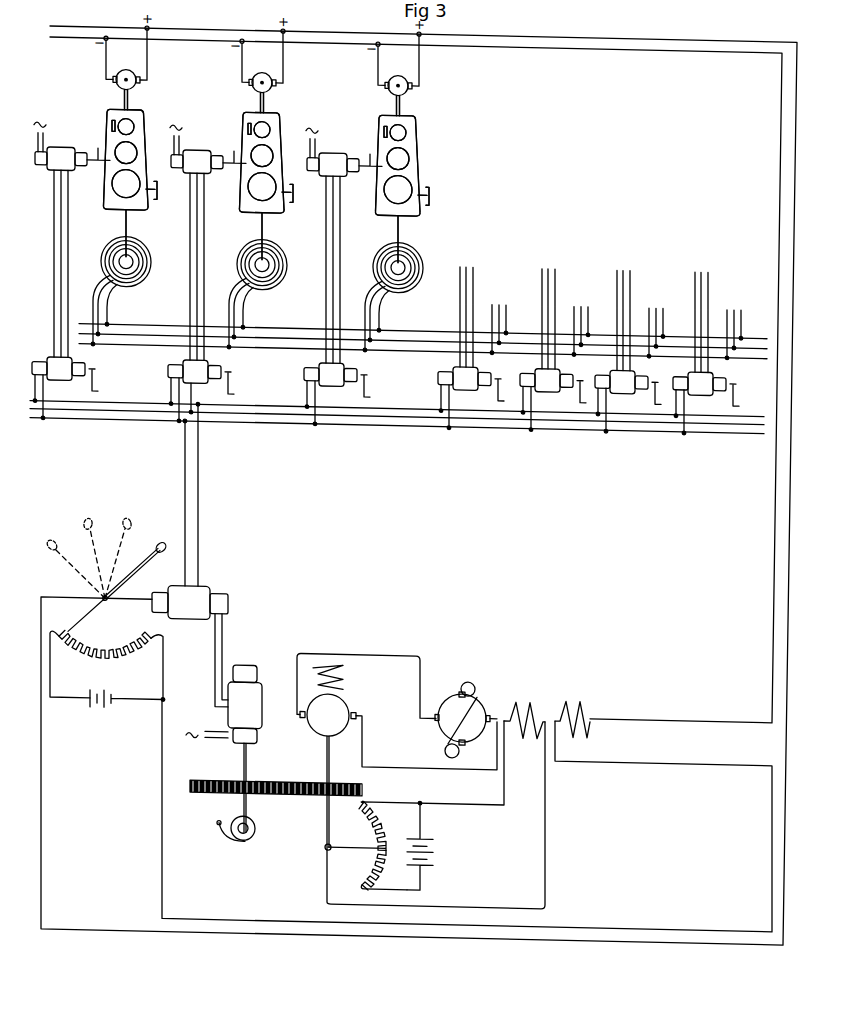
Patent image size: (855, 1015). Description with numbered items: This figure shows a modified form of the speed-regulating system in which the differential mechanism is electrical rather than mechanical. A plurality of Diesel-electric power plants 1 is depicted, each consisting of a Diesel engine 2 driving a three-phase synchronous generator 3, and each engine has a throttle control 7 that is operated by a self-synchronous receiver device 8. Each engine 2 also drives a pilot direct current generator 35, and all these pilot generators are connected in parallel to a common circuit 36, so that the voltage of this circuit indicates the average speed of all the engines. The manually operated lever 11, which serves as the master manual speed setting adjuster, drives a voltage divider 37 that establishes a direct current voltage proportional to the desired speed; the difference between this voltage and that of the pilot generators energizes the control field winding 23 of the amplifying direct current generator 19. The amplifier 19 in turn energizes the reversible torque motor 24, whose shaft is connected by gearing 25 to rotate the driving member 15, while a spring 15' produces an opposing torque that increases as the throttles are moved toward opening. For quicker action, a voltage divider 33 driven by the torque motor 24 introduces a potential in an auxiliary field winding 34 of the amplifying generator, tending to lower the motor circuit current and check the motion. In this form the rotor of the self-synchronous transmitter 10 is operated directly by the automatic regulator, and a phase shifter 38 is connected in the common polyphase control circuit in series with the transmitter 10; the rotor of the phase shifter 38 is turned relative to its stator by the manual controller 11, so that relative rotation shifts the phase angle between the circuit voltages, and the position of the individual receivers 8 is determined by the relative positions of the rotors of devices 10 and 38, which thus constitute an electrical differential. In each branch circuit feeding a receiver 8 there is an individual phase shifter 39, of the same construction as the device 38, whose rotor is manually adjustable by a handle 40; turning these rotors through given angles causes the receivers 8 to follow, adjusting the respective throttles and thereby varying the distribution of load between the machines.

The Diesel-electric power plant 1 is at (104, 106).
The Diesel engine 2 is at (109, 174).
The three-phase synchronous generator 3 is at (145, 279).
The throttle control 7 is at (234, 149).
The self-synchronous receiver device 8 is at (60, 147).
The self-synchronous transmitter 10 is at (258, 690).
The manually operated lever 11 is at (106, 575).
The driving member 15 is at (227, 787).
The spring 15' is at (243, 841).
The direct current generator 19 is at (488, 754).
The control field winding 23 is at (572, 700).
The reversible torque motor 24 is at (337, 724).
The gearing 25 is at (308, 806).
The voltage divider 33 is at (405, 822).
The auxiliary field winding 34 is at (517, 700).
The pilot direct current generator 35 is at (131, 62).
The circuit 36 is at (674, 29).
The voltage divider 37 is at (110, 678).
The phase shifter 38 is at (190, 616).
The individual phase shifter 39 is at (60, 380).
The handle 40 is at (93, 385).